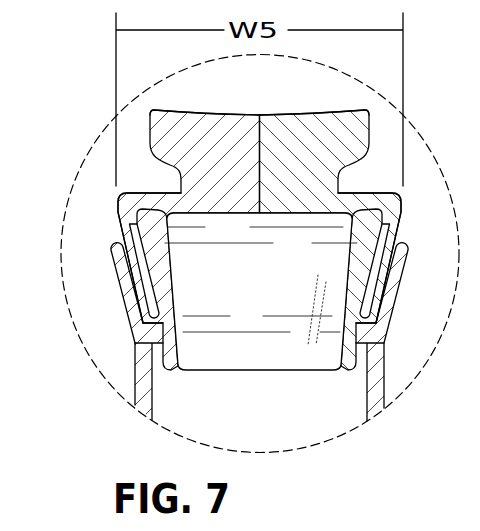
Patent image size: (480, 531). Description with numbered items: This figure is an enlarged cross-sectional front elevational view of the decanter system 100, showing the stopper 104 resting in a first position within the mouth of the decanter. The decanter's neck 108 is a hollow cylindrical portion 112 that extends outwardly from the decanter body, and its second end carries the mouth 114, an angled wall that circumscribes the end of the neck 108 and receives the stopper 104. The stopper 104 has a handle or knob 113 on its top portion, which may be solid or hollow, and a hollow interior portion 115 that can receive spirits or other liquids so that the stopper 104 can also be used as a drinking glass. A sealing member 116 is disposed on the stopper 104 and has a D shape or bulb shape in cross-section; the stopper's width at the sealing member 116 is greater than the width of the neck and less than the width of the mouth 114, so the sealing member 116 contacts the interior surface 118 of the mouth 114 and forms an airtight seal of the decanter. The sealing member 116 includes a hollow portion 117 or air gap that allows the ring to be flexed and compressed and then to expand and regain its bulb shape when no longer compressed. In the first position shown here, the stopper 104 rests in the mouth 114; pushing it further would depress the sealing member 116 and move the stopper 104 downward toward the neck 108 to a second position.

The decanter system 100 is at (80, 104).
The stopper 104 is at (293, 119).
The neck 108 is at (302, 389).
The hollow cylindrical portion 112 is at (367, 390).
The knob 113 is at (207, 123).
The mouth 114 is at (118, 271).
The hollow interior portion 115 is at (347, 237).
The sealing member 116 is at (399, 230).
The hollow portion 117 is at (133, 217).
The interior surface 118 is at (382, 313).